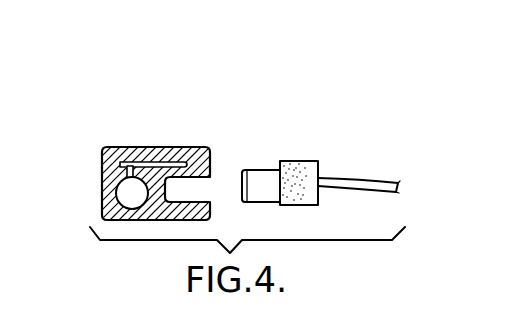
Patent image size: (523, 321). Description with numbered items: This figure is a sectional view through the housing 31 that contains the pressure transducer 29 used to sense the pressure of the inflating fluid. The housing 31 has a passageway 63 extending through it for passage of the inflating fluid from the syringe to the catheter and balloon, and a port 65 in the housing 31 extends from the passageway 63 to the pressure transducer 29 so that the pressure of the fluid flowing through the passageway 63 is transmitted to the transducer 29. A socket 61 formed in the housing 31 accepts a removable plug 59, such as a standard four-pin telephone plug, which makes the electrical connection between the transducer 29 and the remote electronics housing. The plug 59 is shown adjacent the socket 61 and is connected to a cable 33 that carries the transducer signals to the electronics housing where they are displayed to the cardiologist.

The housing 31 is at (155, 135).
The pressure transducer 29 is at (193, 107).
The socket 61 is at (204, 184).
The port 65 is at (110, 175).
The passageway 63 is at (116, 201).
The removable plug 59 is at (313, 160).
The cable 33 is at (378, 178).